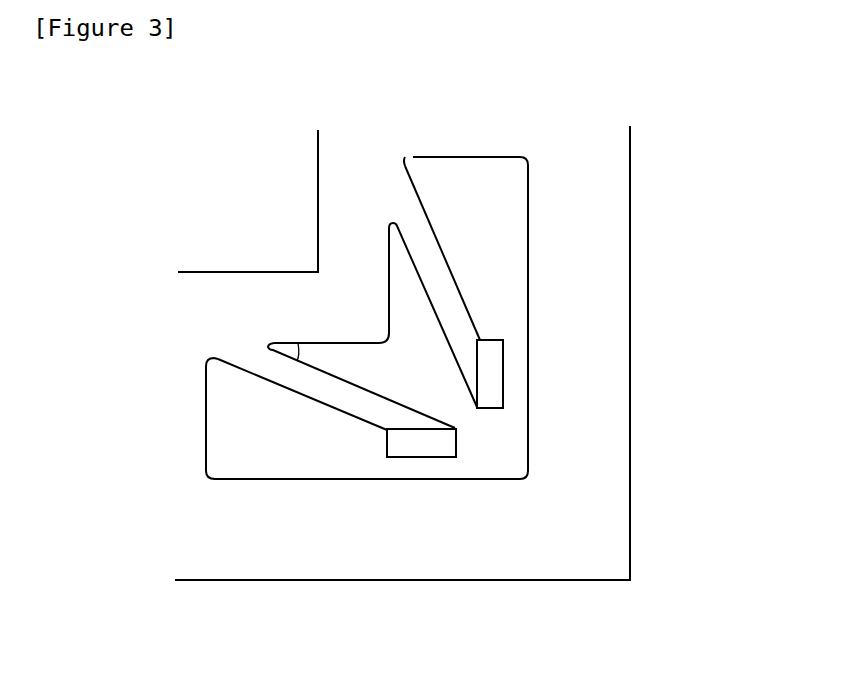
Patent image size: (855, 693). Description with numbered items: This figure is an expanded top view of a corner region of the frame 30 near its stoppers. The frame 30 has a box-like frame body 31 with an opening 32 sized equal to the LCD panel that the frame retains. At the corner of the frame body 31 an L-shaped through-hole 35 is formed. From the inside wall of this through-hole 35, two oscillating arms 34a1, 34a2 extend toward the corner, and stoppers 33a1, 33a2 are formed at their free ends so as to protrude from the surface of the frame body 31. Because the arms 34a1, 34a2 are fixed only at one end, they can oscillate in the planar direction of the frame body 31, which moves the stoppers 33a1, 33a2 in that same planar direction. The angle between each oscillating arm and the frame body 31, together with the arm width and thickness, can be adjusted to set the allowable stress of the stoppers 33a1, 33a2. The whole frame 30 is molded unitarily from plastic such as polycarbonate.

The frame 30 is at (680, 306).
The frame body 31 is at (630, 371).
The opening 32 is at (318, 171).
The stopper 33a1 is at (456, 445).
The stopper 33a2 is at (490, 408).
The oscillating arm 34a1 is at (253, 373).
The oscillating arm 34a2 is at (418, 233).
The L-shaped through-hole 35 is at (346, 479).